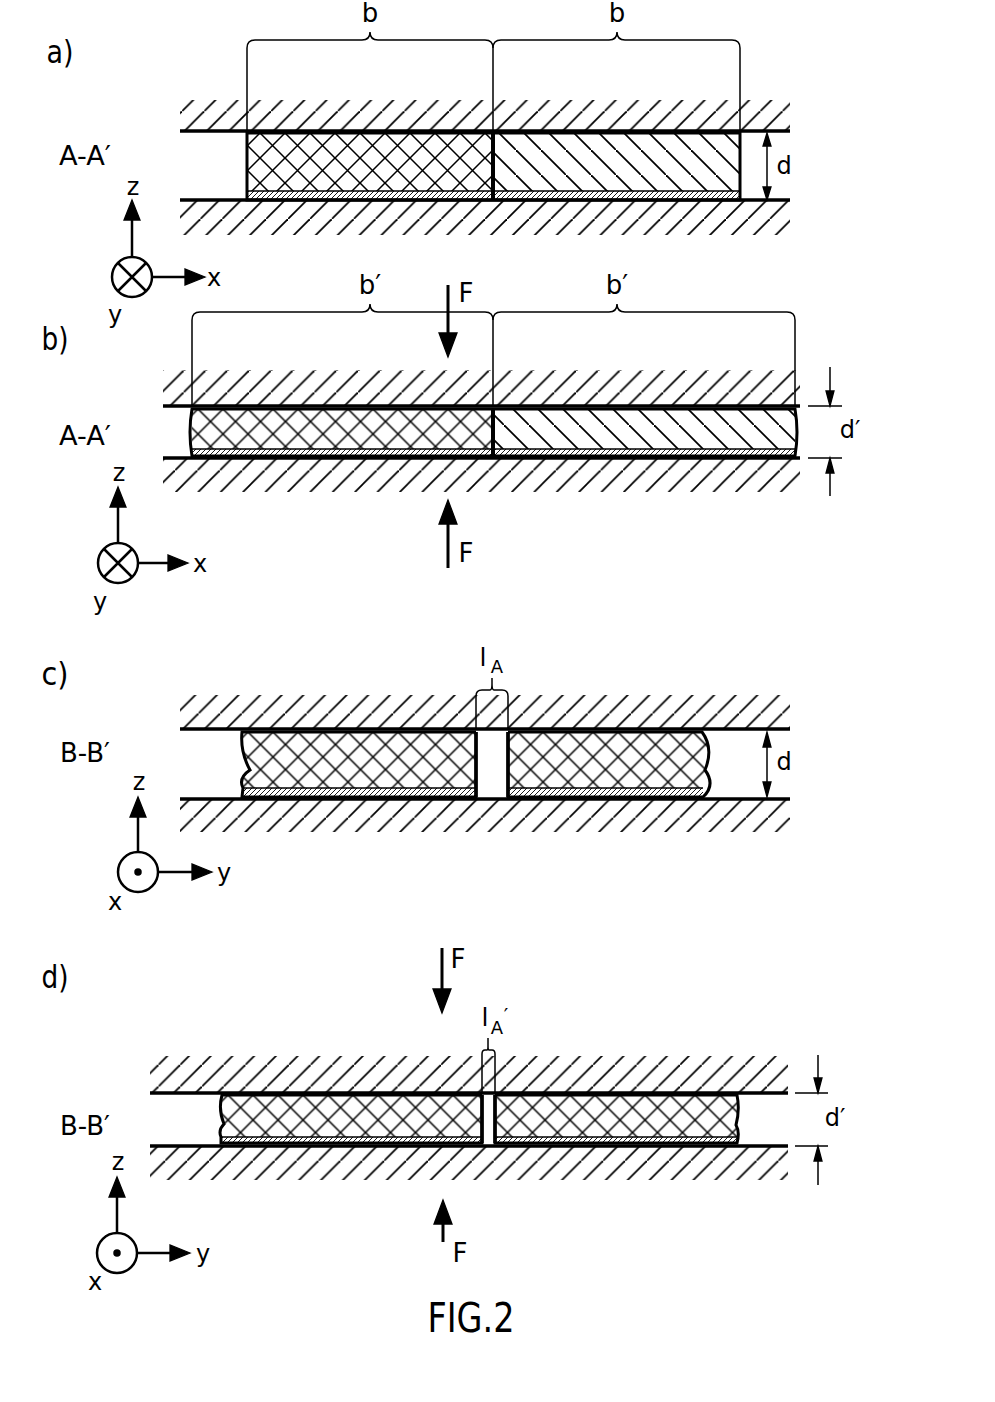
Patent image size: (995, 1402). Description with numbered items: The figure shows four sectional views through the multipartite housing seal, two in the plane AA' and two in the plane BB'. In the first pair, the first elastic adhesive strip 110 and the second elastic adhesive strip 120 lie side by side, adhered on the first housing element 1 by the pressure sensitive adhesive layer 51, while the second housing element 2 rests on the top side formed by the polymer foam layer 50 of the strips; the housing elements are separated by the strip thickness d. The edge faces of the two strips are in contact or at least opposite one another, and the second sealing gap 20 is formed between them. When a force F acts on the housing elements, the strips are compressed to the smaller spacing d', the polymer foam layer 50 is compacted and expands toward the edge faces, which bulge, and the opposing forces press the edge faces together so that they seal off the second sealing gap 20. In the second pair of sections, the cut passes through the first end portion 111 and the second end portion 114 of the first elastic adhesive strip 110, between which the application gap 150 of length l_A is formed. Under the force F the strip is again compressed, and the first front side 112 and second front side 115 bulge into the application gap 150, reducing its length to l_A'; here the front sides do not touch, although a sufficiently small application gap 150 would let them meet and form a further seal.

The first housing element 1 is at (308, 110).
The second housing element 2 is at (700, 215).
The polymer foam layer 50 is at (493, 641).
The pressure sensitive adhesive layer 51 is at (325, 200).
The first elastic adhesive strip 110 is at (342, 597).
The first end portion 111 is at (675, 760).
The first front side 112 is at (507, 755).
The second end portion 114 is at (420, 755).
The second front side 115 is at (478, 768).
The second elastic adhesive strip 120 is at (645, 170).
The second sealing gap 20 is at (529, 254).
The application gap 150 is at (488, 750).